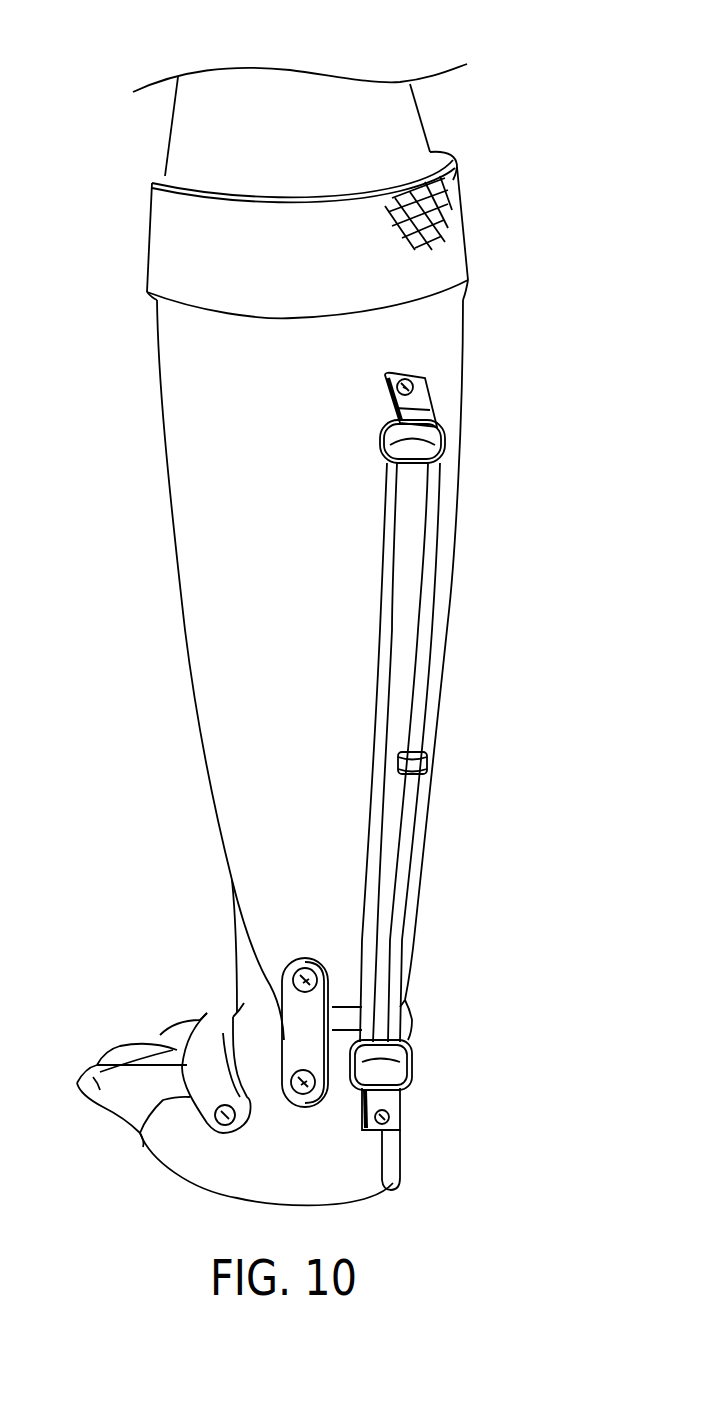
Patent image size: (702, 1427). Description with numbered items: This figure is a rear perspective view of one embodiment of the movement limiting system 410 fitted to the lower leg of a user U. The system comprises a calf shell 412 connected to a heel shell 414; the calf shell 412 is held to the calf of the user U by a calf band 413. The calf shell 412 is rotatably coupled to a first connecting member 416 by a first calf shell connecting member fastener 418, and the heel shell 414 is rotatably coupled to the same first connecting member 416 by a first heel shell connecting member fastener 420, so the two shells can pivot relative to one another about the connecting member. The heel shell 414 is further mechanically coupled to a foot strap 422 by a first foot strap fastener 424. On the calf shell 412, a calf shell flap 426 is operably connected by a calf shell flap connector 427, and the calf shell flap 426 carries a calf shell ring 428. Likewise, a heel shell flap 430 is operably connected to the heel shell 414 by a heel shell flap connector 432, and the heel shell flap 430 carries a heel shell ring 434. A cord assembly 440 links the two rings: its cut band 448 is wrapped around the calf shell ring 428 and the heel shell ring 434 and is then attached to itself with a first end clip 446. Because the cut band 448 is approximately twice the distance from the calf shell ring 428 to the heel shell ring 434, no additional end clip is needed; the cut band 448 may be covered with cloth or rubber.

The user U is at (307, 113).
The movement limiting system 410 is at (383, 1252).
The calf shell 412 is at (325, 612).
The calf band 413 is at (463, 222).
The heel shell 414 is at (217, 1160).
The first connecting member 416 is at (296, 1035).
The first calf shell connecting member fastener 418 is at (322, 975).
The first heel shell connecting member fastener 420 is at (305, 1083).
The foot strap 422 is at (154, 1081).
The first foot strap fastener 424 is at (227, 1112).
The calf shell flap 426 is at (387, 393).
The calf shell flap connector 427 is at (414, 387).
The calf shell ring 428 is at (382, 442).
The heel shell flap 430 is at (397, 1107).
The heel shell flap connector 432 is at (387, 1183).
The heel shell ring 434 is at (413, 1055).
The cord assembly 440 is at (420, 752).
The first end clip 446 is at (443, 757).
The cut band 448 is at (380, 688).